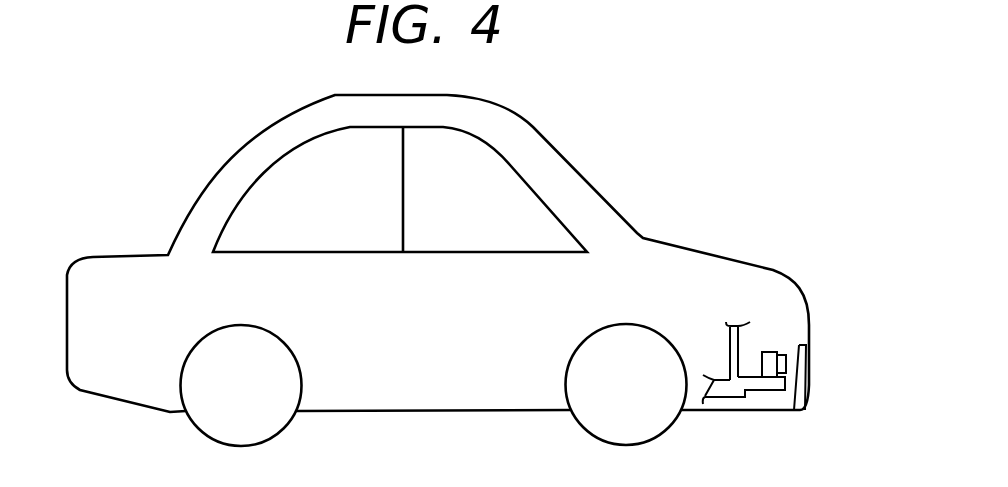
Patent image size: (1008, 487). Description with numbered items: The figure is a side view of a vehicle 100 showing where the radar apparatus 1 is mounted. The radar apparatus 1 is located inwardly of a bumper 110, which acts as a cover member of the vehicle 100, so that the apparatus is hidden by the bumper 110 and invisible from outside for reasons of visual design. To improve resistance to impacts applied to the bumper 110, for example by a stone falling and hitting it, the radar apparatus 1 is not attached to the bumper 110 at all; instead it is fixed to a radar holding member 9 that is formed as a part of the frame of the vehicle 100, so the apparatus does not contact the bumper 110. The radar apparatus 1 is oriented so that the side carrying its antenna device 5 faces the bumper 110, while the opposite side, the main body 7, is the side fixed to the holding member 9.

The vehicle 100 is at (607, 162).
The radar apparatus 1 is at (738, 333).
The radar holding member 9 is at (730, 347).
The main body 7 is at (767, 351).
The antenna device 5 is at (787, 354).
The bumper 110 is at (810, 366).